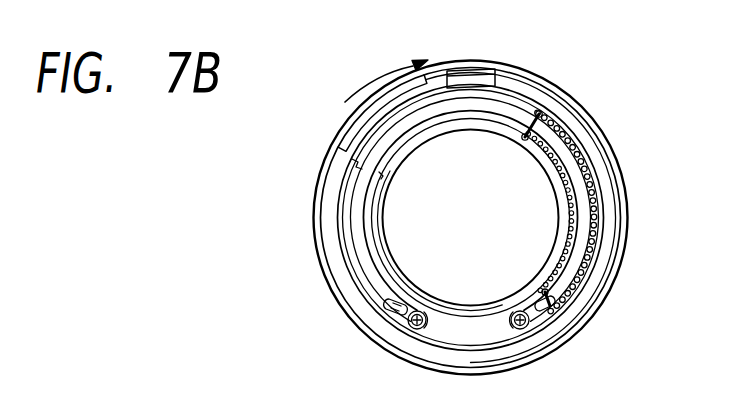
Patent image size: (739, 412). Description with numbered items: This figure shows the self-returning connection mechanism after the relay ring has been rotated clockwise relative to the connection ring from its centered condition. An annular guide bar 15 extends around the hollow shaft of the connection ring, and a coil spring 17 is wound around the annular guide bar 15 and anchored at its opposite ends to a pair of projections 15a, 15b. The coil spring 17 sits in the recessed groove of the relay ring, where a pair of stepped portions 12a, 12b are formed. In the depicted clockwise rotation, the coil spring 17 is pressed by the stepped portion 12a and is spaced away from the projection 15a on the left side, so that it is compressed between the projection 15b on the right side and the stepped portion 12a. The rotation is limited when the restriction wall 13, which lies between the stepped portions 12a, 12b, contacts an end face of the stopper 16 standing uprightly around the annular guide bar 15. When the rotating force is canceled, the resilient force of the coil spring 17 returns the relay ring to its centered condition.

The restriction wall 13 is at (437, 82).
The stopper 16 is at (490, 78).
The stepped portion 12a is at (532, 109).
The stepped portion 12b is at (355, 165).
The annular guide bar 15 is at (355, 222).
The projection 15a is at (386, 306).
The projection 15b is at (544, 314).
The coil spring 17 is at (590, 201).